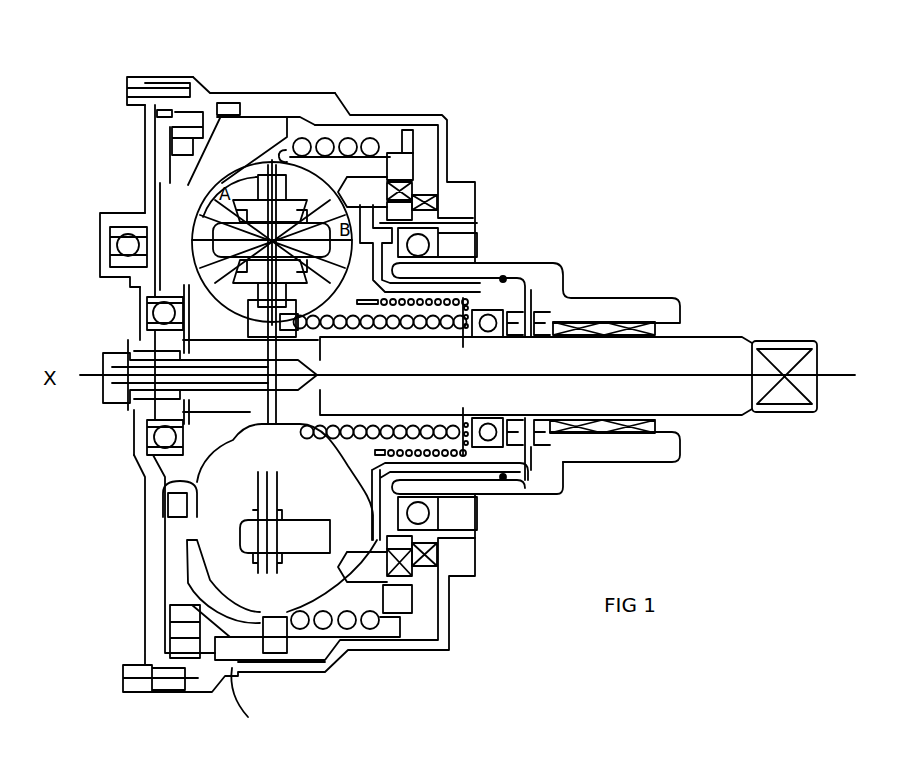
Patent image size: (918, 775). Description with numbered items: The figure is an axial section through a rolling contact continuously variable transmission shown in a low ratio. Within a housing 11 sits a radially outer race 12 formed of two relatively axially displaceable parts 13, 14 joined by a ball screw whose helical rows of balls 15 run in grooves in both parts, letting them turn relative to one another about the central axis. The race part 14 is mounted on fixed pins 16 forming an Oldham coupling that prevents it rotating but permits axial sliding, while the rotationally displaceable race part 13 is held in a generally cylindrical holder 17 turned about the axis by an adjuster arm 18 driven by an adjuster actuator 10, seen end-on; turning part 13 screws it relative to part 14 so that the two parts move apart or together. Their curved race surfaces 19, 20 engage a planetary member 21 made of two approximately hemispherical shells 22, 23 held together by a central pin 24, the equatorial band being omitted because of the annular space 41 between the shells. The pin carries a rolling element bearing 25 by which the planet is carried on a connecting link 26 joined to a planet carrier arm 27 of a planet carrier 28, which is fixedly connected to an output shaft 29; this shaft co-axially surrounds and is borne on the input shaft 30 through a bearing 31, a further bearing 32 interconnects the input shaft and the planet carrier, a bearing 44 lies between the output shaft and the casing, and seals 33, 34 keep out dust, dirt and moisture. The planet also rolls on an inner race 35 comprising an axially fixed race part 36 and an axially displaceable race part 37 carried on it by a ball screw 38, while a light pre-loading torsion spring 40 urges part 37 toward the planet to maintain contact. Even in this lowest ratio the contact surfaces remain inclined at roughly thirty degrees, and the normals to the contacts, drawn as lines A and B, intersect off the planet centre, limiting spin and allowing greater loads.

The adjuster actuator 10 is at (178, 224).
The housing 11 is at (443, 140).
The radially outer race 12 is at (200, 153).
The rotationally displaceable race part 13 is at (244, 145).
The axially displaceable race part 14 is at (368, 158).
The balls 15 is at (318, 625).
The fixed pins 16 is at (362, 575).
The cylindrical holder 17 is at (232, 118).
The adjuster arm 18 is at (160, 205).
The curved race surface 19 is at (235, 170).
The curved race surface 20 is at (277, 148).
The planetary member 21 is at (170, 223).
The hemispherical shell 22 is at (223, 290).
The hemispherical shell 23 is at (357, 318).
The central pin 24 is at (395, 268).
The rolling element bearing 25 is at (400, 217).
The connecting link 26 is at (250, 313).
The planet carrier arm 27 is at (303, 525).
The planet carrier 28 is at (477, 473).
The output shaft 29 is at (653, 448).
The input shaft 30 is at (703, 398).
The bearing 31 is at (672, 333).
The further bearing 32 is at (503, 443).
The seal 33 is at (537, 427).
The seal 34 is at (512, 425).
The inner race 35 is at (193, 483).
The axially fixed race part 36 is at (207, 428).
The axially displaceable race part 37 is at (352, 490).
The ball screw 38 is at (372, 427).
The pre-loading torsion spring 40 is at (468, 302).
The annular space 41 is at (293, 320).
The bearing 44 is at (423, 518).